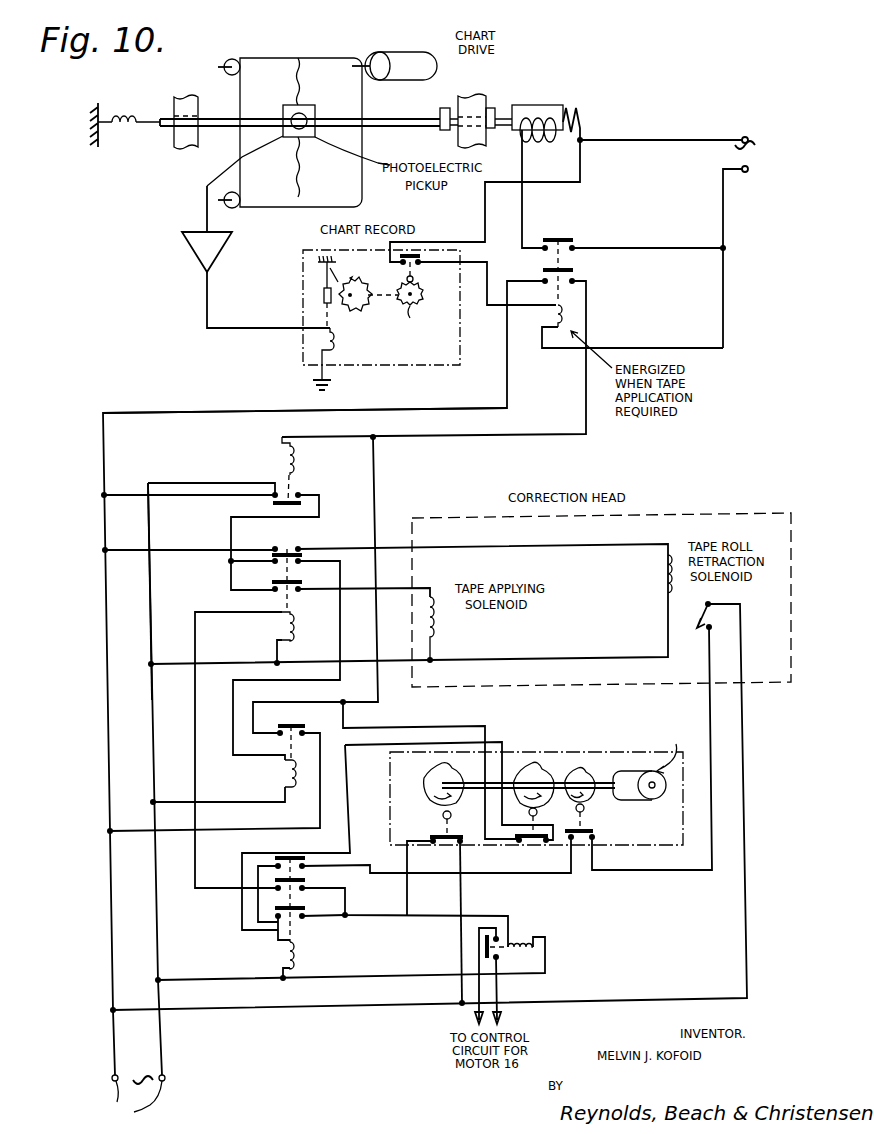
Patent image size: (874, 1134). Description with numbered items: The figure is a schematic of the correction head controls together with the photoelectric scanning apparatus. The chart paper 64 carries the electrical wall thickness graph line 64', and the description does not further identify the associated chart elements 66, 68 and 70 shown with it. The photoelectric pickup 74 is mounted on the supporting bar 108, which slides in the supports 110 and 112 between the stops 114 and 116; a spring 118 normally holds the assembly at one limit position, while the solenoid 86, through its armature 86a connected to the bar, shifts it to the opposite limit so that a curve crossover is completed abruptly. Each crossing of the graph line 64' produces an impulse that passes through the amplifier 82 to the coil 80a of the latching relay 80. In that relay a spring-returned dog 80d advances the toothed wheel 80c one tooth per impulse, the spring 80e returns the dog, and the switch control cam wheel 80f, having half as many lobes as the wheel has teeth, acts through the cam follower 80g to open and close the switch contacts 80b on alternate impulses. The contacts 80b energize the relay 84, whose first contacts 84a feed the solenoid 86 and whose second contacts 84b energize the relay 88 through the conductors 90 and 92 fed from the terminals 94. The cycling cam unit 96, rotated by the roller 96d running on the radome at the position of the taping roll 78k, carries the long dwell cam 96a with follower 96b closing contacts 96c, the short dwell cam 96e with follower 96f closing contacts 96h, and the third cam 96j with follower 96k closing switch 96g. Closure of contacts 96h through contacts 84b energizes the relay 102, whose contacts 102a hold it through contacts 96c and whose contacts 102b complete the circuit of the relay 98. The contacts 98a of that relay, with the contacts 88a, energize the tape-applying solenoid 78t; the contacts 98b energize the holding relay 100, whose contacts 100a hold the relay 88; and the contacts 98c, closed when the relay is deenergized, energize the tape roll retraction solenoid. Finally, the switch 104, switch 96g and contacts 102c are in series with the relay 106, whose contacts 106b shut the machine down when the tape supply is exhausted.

The chart paper 64 is at (300, 152).
The electrical wall thickness graph line 64' is at (301, 132).
The lower chart roller 66 is at (240, 207).
The upper chart roller 68 is at (226, 61).
The chart drive motor 70 is at (400, 52).
The photoelectric pickup 74 is at (290, 103).
The taping roll 78k is at (676, 549).
The tape-applying solenoid 78t is at (450, 628).
The latching relay 80 is at (466, 353).
The latching relay coil 80a is at (336, 348).
The switch contacts 80b is at (404, 266).
The toothed wheel 80c is at (354, 312).
The spring-returned dog 80d is at (336, 275).
The spring 80e is at (322, 280).
The switch control cam wheel 80f is at (411, 312).
The cam follower 80g is at (418, 284).
The amplifier 82 is at (184, 254).
The relay 84 is at (540, 330).
The first set of contacts 84a is at (576, 252).
The second set of contacts 84b is at (578, 274).
The solenoid 86 is at (582, 106).
The armature 86a is at (532, 104).
The relay 88 is at (322, 469).
The contacts of relay 88 88a is at (301, 500).
The conductor 90 is at (104, 690).
The conductor 92 is at (150, 690).
The energization terminals 94 is at (133, 1112).
The cycling cam unit 96 is at (643, 846).
The long dwell cam 96a is at (425, 771).
The follower 96b is at (442, 816).
The switch contacts 96c is at (448, 846).
The roller 96d is at (636, 772).
The short dwell cam 96e is at (535, 765).
The cam follower 96f is at (529, 812).
The switch 96g is at (596, 846).
The switch contacts 96h is at (524, 845).
The third cam 96j is at (566, 772).
The cam follower 96k is at (576, 808).
The relay 98 is at (264, 633).
The contacts of relay 98 98a is at (301, 593).
The second set of contacts 98b is at (301, 565).
The third set of contacts 98c is at (301, 548).
The holding relay 100 is at (272, 784).
The contacts of relay 100 100a is at (291, 735).
The relay 102 is at (272, 963).
The second set of contacts 102a is at (303, 920).
The contacts of relay 102 102b is at (304, 888).
The third set of contacts 102c is at (304, 866).
The switch 104 is at (702, 614).
The relay 106 is at (545, 929).
The contacts of relay 106 106b is at (503, 958).
The supporting bar 108 is at (383, 117).
The support 110 is at (470, 96).
The support 112 is at (180, 97).
The stop 114 is at (492, 106).
The stop 116 is at (440, 126).
The spring 118 is at (129, 130).